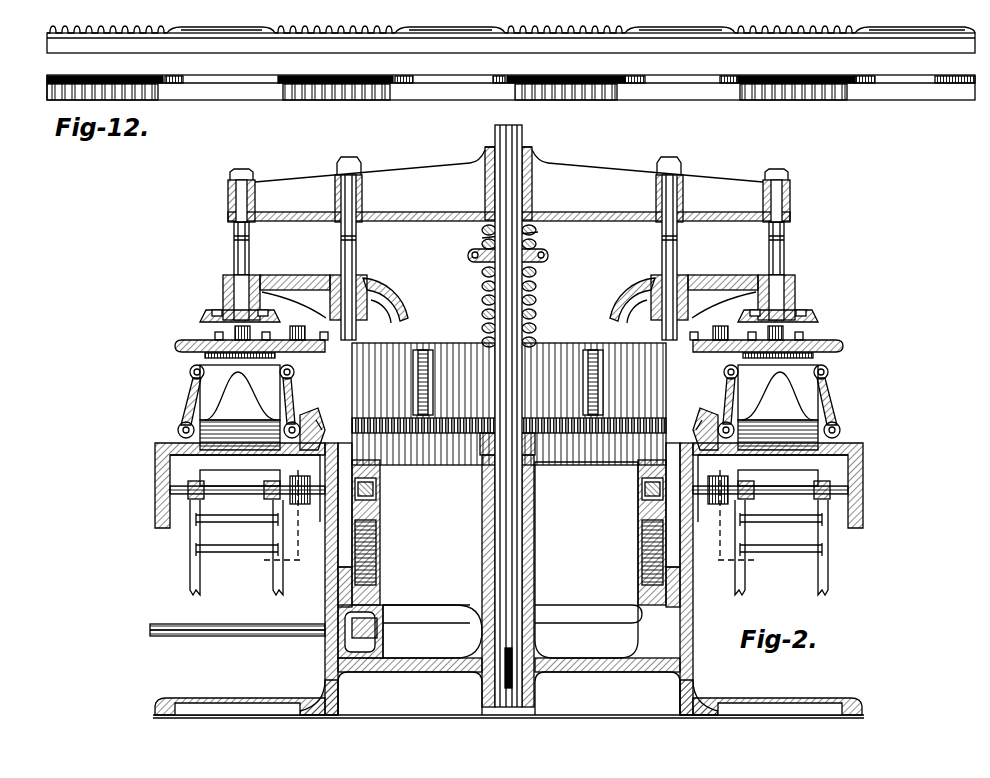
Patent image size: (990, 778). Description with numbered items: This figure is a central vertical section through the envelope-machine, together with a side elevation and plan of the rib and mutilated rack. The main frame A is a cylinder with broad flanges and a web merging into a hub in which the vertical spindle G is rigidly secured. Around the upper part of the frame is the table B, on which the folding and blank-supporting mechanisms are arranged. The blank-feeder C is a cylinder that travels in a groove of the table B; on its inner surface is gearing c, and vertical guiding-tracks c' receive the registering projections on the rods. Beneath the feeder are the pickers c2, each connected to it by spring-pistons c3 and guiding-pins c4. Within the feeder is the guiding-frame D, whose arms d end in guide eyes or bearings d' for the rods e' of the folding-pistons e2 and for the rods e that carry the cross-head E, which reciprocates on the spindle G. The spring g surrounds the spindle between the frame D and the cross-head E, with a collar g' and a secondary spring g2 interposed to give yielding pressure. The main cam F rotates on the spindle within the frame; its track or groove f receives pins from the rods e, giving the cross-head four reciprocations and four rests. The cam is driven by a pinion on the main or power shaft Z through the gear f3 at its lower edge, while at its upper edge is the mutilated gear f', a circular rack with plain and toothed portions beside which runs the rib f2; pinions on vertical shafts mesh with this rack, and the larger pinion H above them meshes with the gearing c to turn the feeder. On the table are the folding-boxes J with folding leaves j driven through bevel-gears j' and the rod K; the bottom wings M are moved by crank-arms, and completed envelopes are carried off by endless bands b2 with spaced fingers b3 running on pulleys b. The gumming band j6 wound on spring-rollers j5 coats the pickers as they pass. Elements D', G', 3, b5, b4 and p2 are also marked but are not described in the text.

In FIG. 12, the mutilated gear f' is at (511, 53).
In FIG. 2, the mutilated gear f' is at (396, 473).
In FIG. 12, the rib f2 is at (446, 30).
In FIG. 2, the rib f2 is at (642, 482).
In FIG. 2, the main frame A is at (596, 660).
In FIG. 2, the main or power shaft Z is at (237, 619).
In FIG. 2, the larger pinion H is at (435, 418).
In FIG. 2, the guiding-tracks c' is at (508, 370).
In FIG. 2, the hub collar D' is at (498, 458).
In FIG. 2, the shaft sleeve G' is at (521, 581).
In FIG. 2, the gear f3 is at (442, 623).
In FIG. 2, the block 3 is at (378, 632).
In FIG. 2, the bearing spring b5 is at (378, 540).
In FIG. 2, the main cam F is at (551, 519).
In FIG. 2, the cross-head E is at (509, 184).
In FIG. 2, the collar g' is at (515, 258).
In FIG. 2, the secondary spring g2 is at (538, 233).
In FIG. 2, the spring g is at (517, 286).
In FIG. 2, the vertical spindle G is at (508, 416).
In FIG. 2, the arms d is at (509, 297).
In FIG. 2, the rods e is at (516, 248).
In FIG. 2, the guiding-frame D is at (509, 297).
In FIG. 2, the rods of the folding-pistons e' is at (517, 244).
In FIG. 2, the guide eyes or bearings d' is at (510, 290).
In FIG. 2, the folding-pistons e2 is at (212, 311).
In FIG. 2, the blank-feeder C is at (508, 345).
In FIG. 2, the spring-pistons c3 is at (252, 330).
In FIG. 2, the guiding-pins c4 is at (514, 329).
In FIG. 2, the pickers c2 is at (205, 356).
In FIG. 2, the folding-box J is at (507, 407).
In FIG. 2, the folding leaves j is at (509, 396).
In FIG. 2, the spring-rollers j5 is at (190, 370).
In FIG. 2, the band j6 is at (292, 367).
In FIG. 2, the bevel-gears j' is at (499, 405).
In FIG. 2, the rod K is at (305, 412).
In FIG. 2, the gearing c is at (505, 412).
In FIG. 2, the table B is at (505, 485).
In FIG. 2, the rollers or pulleys b is at (185, 500).
In FIG. 2, the wings M is at (509, 471).
In FIG. 2, the endless bands b2 is at (200, 556).
In FIG. 2, the spaced fingers b3 is at (240, 552).
In FIG. 2, the link b4 is at (312, 562).
In FIG. 2, the track or groove f is at (509, 489).
In FIG. 2, the pin p2 is at (466, 462).